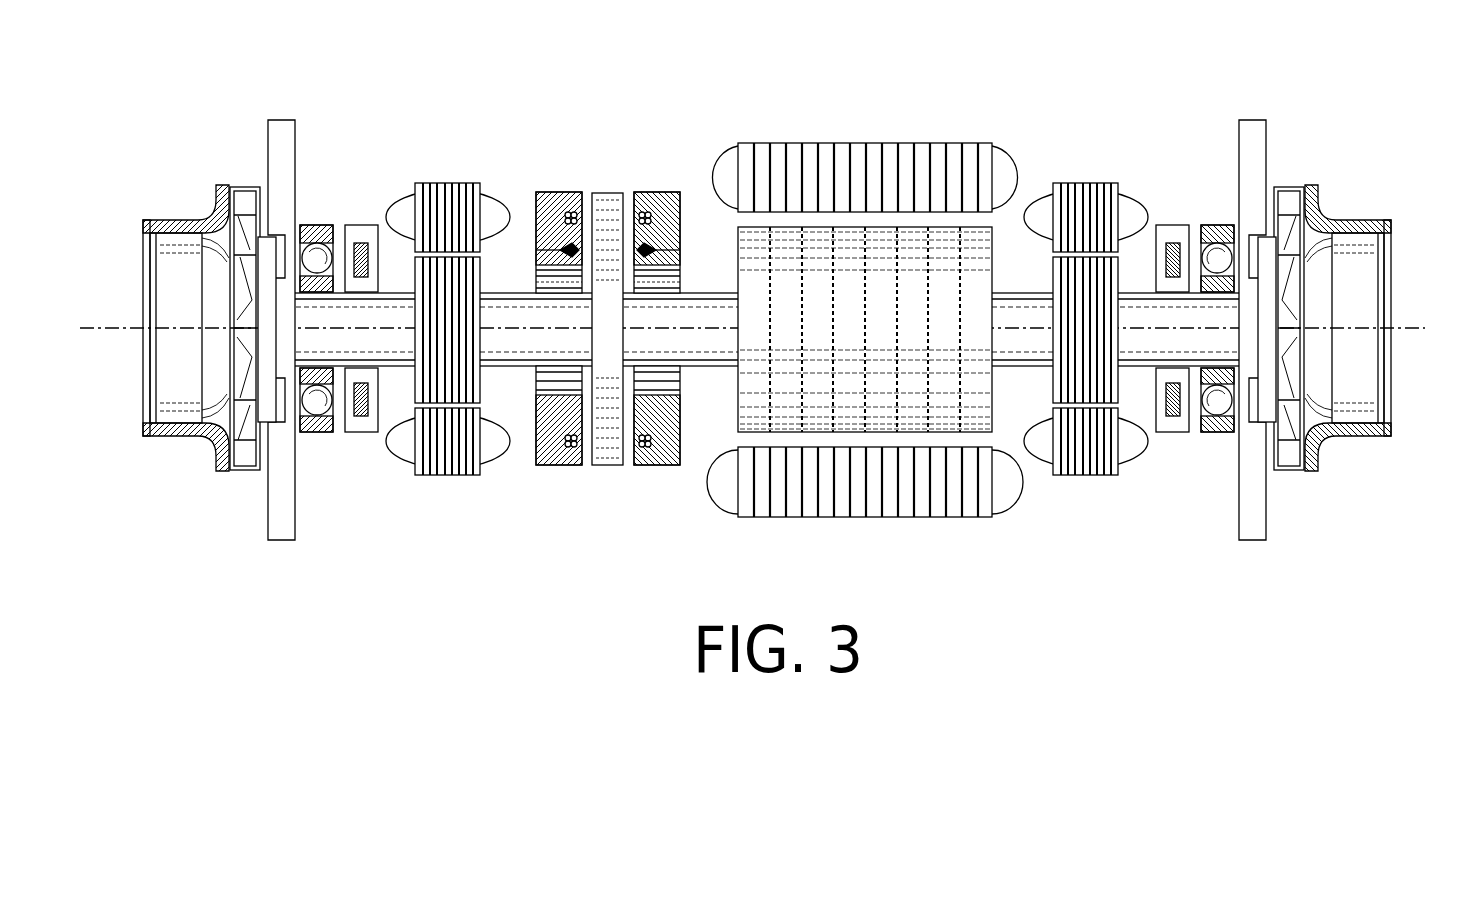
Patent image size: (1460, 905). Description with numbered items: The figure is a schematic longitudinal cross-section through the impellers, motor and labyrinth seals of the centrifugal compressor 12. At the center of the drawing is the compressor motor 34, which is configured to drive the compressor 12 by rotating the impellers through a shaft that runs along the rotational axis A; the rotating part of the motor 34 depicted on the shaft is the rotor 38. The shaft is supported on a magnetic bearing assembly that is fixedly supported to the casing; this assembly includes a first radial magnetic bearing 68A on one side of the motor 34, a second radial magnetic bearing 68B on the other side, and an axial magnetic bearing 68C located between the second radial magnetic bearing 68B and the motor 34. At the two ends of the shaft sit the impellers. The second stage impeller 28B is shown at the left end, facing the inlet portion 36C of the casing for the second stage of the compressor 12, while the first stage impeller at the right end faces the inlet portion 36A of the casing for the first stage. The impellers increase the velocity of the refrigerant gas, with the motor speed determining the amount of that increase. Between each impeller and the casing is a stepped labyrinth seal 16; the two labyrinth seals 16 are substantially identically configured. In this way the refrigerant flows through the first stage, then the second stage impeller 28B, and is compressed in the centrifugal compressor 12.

The centrifugal compressor 12 is at (128, 226).
The stepped labyrinth seal 16 is at (136, 426).
The rotational axis A is at (110, 328).
The second stage impeller 28B is at (245, 188).
The inlet portion 36C is at (200, 230).
The inlet portion 36A is at (1350, 222).
The second radial magnetic bearing 68B is at (457, 183).
The first radial magnetic bearing 68A is at (1090, 183).
The axial magnetic bearing 68C is at (562, 467).
The compressor motor 34 is at (992, 128).
The rotor 38 is at (1136, 368).